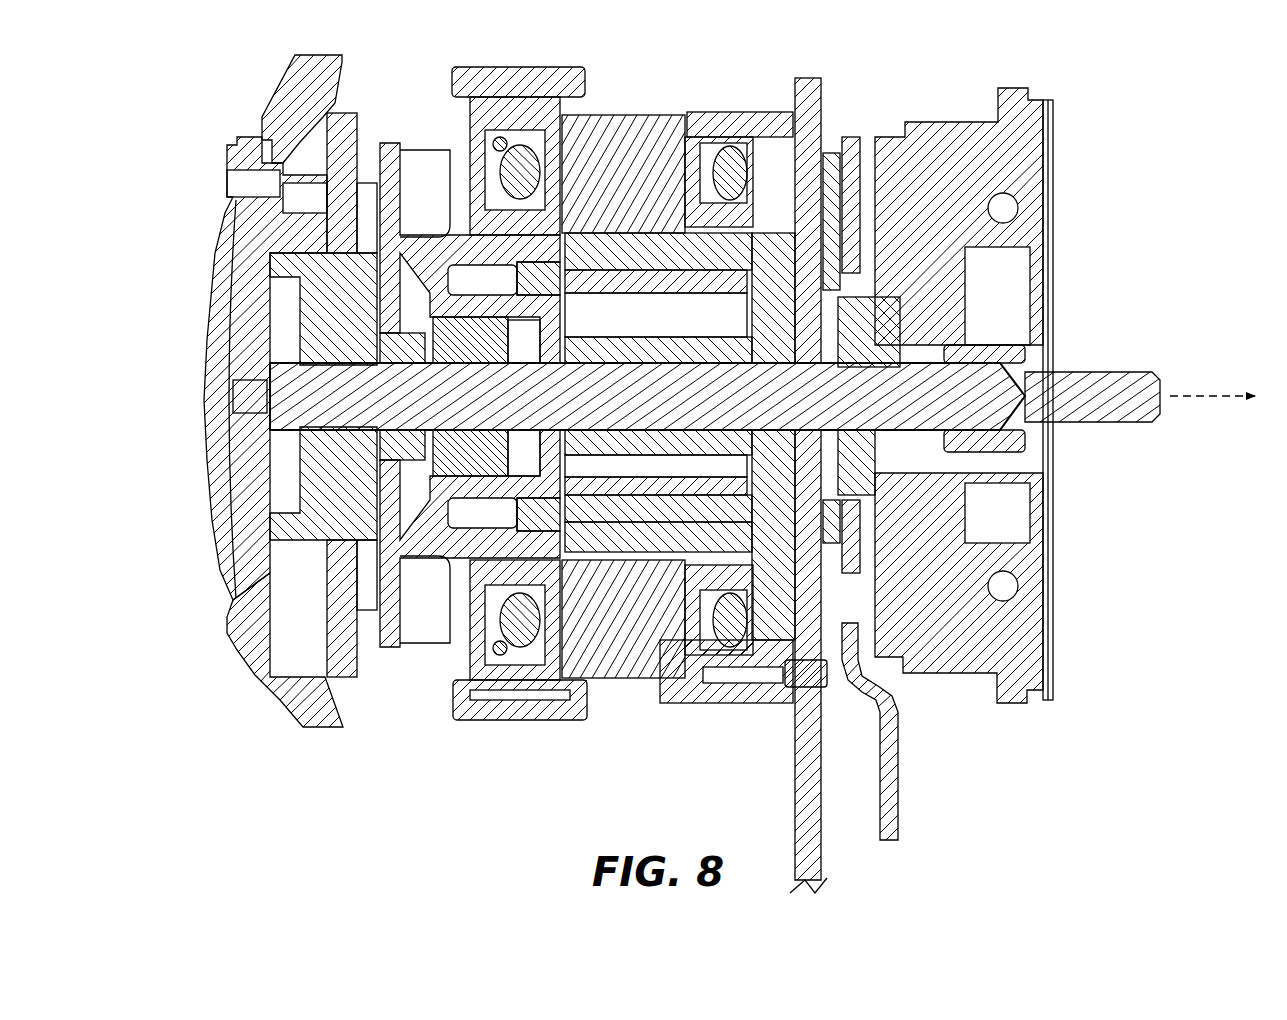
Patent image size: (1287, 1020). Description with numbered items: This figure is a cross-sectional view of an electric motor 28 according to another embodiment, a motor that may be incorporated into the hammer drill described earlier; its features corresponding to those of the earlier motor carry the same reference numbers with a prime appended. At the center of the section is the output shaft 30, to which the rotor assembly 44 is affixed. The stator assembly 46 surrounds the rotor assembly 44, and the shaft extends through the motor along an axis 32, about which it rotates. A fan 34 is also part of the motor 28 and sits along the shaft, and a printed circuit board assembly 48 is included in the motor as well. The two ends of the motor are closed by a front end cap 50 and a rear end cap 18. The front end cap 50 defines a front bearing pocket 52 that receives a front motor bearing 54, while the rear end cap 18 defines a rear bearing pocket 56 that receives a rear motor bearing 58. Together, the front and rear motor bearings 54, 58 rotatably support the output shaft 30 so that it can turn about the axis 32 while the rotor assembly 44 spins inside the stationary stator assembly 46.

The rear end cap 18 is at (268, 652).
The electric motor 28 is at (362, 797).
The output shaft 30 is at (915, 375).
The axis 32 is at (1200, 408).
The fan 34 is at (390, 143).
The rotor assembly 44 is at (617, 208).
The stator assembly 46 is at (618, 703).
The printed circuit board (PCB) assembly 48 is at (912, 745).
The front end cap 50 is at (1035, 118).
The front bearing pocket 52 is at (868, 482).
The front motor bearing 54 is at (876, 320).
The rear bearing pocket 56 is at (335, 506).
The rear motor bearing 58 is at (325, 305).